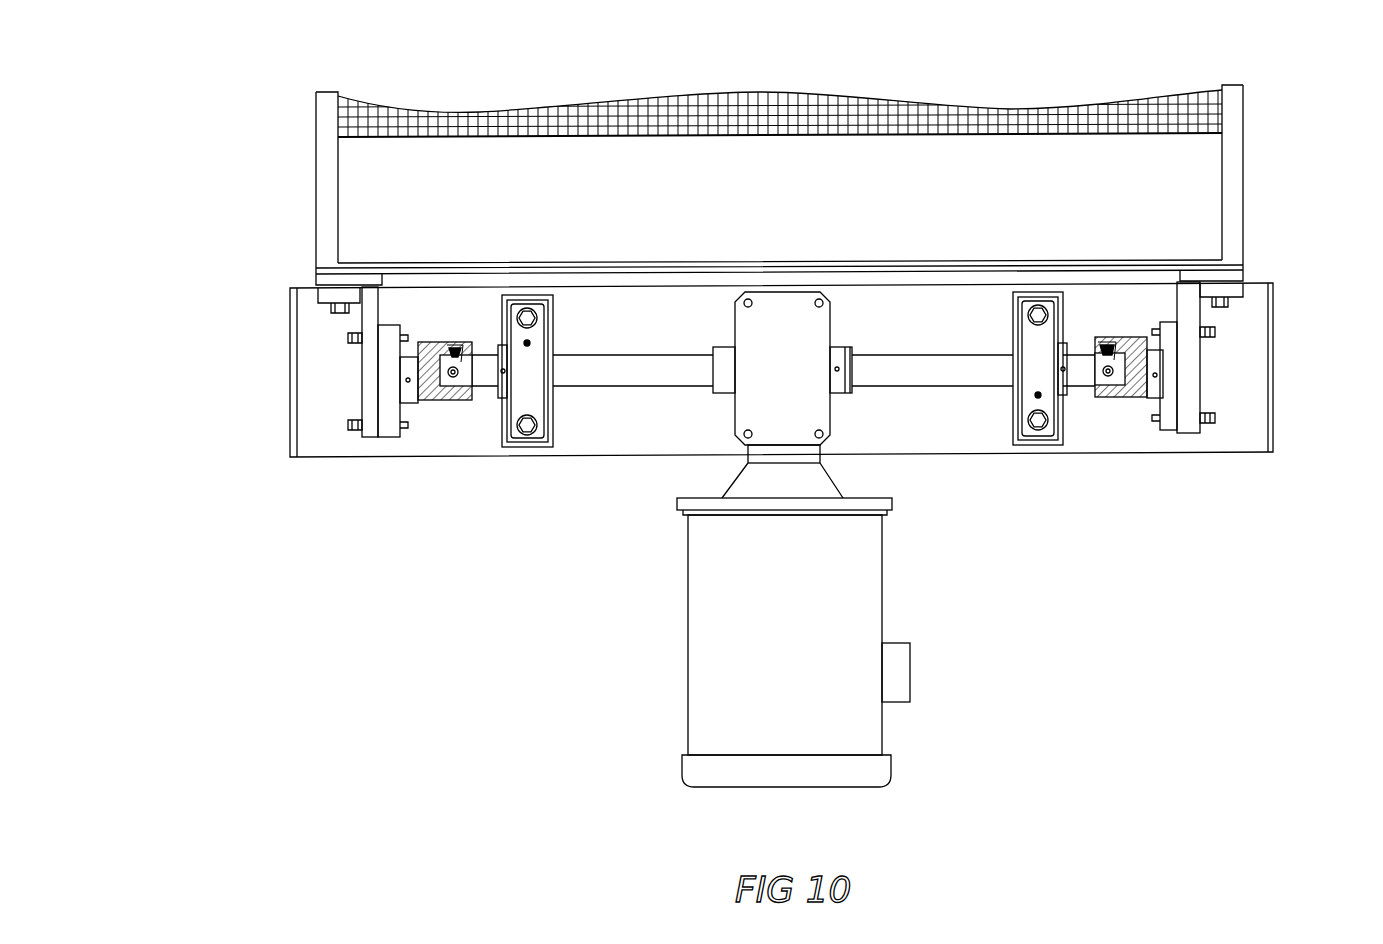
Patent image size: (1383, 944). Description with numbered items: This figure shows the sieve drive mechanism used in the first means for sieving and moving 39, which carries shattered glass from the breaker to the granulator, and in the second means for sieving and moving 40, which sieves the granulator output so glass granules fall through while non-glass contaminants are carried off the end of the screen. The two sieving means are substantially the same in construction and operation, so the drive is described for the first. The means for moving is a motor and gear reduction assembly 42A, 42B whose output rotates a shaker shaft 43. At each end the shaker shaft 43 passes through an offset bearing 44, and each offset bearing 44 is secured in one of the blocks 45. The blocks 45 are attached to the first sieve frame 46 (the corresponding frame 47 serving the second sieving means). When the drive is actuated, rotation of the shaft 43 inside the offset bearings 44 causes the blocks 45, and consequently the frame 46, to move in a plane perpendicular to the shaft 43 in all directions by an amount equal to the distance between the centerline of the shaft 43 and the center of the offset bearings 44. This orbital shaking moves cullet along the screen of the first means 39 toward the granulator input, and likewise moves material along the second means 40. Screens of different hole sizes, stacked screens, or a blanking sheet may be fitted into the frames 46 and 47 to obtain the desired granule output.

The first means for sieving and moving 39 is at (780, 75).
The second means for sieving and moving 40 is at (868, 103).
The motor and gear reduction assembly 42A is at (666, 539).
The motor 42B is at (688, 668).
The shaker shaft 43 is at (933, 385).
The offset bearing 44 is at (503, 430).
The blocks 45 is at (363, 390).
The first sieve frame 46 is at (671, 199).
The frame 47 is at (317, 207).